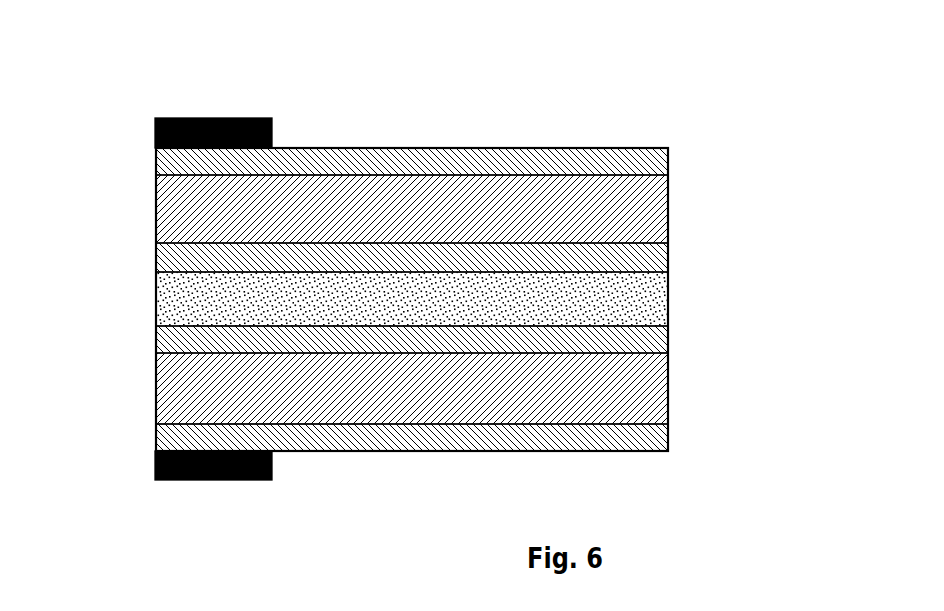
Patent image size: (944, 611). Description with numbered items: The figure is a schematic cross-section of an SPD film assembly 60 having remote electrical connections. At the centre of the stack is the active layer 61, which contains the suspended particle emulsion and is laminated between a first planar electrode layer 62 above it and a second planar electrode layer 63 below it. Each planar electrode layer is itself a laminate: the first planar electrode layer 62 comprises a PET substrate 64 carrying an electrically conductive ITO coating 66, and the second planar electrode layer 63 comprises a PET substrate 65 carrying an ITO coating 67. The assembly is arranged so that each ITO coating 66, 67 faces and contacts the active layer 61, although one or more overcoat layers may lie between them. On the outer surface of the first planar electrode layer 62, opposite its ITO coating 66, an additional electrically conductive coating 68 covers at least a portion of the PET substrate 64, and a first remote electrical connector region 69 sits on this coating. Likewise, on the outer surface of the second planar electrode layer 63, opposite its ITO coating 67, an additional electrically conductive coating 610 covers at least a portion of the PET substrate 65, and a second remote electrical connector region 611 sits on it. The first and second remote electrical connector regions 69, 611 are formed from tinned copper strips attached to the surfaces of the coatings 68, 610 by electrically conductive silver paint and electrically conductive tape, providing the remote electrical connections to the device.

The SPD film assembly 60 is at (442, 283).
The active layer 61 is at (645, 300).
The first planar electrode layer 62 is at (442, 226).
The second planar electrode layer 63 is at (443, 377).
The PET substrate 64 is at (643, 208).
The PET substrate 65 is at (650, 393).
The ITO coating 66 is at (652, 253).
The ITO coating 67 is at (653, 343).
The additional electrically conductive coating 68 is at (632, 157).
The first remote electrical connector region 69 is at (272, 118).
The additional electrically conductive coating 610 is at (655, 433).
The second remote electrical connector region 611 is at (272, 480).